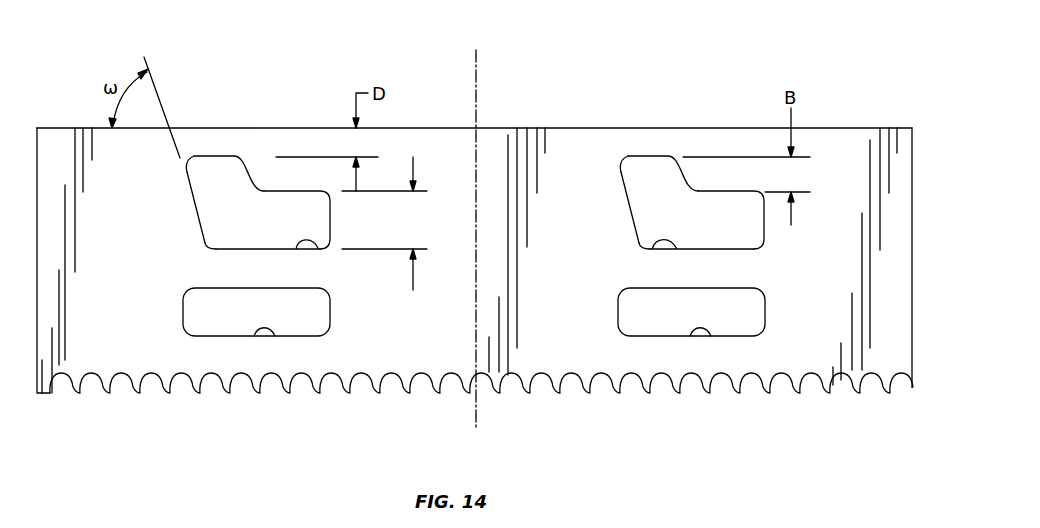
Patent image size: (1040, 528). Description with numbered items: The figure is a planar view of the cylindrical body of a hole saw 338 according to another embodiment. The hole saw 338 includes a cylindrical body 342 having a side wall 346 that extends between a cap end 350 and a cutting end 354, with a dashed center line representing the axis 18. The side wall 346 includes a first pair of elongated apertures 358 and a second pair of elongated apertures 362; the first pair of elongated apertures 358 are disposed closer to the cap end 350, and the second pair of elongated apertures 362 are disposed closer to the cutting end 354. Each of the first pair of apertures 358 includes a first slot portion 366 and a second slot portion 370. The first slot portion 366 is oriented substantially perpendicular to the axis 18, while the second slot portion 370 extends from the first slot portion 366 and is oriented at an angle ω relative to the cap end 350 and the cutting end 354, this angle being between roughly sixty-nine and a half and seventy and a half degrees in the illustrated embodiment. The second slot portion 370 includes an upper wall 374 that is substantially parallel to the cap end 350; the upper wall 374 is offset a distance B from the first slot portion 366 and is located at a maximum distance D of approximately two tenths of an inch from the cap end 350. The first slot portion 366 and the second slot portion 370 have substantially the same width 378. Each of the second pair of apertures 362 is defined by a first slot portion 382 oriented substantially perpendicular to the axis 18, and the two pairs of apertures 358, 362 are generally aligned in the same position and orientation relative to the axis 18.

The hole saw 338 is at (730, 51).
The axis 18 is at (478, 92).
The cap end 350 is at (818, 128).
The cylindrical body 342 is at (912, 170).
The side wall 346 is at (893, 315).
The cutting end 354 is at (783, 395).
The first pair of elongated apertures 358 is at (198, 209).
The upper wall 374 is at (212, 155).
The second slot portion 370 is at (196, 194).
The first slot portion 366 is at (318, 248).
The width 378 is at (352, 223).
The second pair of elongated apertures 362 is at (183, 312).
The first slot portion 382 is at (262, 334).